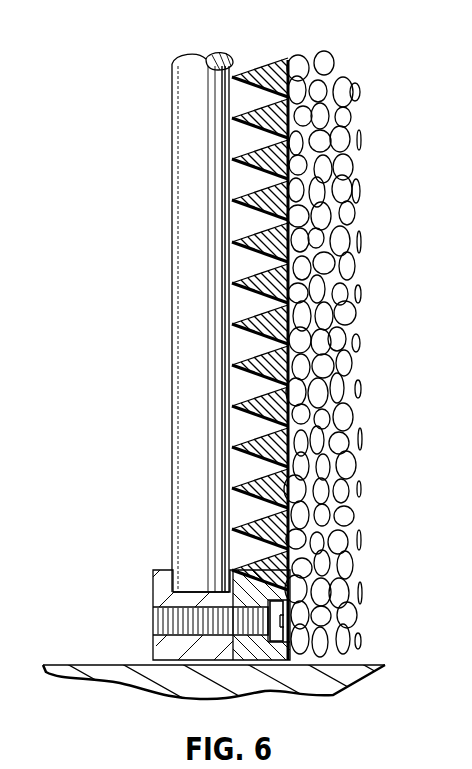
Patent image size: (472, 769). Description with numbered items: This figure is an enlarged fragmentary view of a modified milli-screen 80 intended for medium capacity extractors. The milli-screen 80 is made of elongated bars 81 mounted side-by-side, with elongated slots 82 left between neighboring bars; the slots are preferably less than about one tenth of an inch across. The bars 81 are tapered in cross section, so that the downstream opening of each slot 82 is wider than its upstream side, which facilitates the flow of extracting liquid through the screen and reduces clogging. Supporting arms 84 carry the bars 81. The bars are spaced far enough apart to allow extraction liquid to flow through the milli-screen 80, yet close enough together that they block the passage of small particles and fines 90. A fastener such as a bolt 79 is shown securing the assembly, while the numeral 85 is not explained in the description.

The bolts 79 is at (275, 603).
The milli-screen 80 is at (140, 165).
The elongated bars 81 is at (283, 70).
The elongated slots 82 is at (290, 203).
The supporting arms 84 is at (198, 403).
The base block 85 is at (160, 593).
The small particles and fines 90 is at (355, 372).